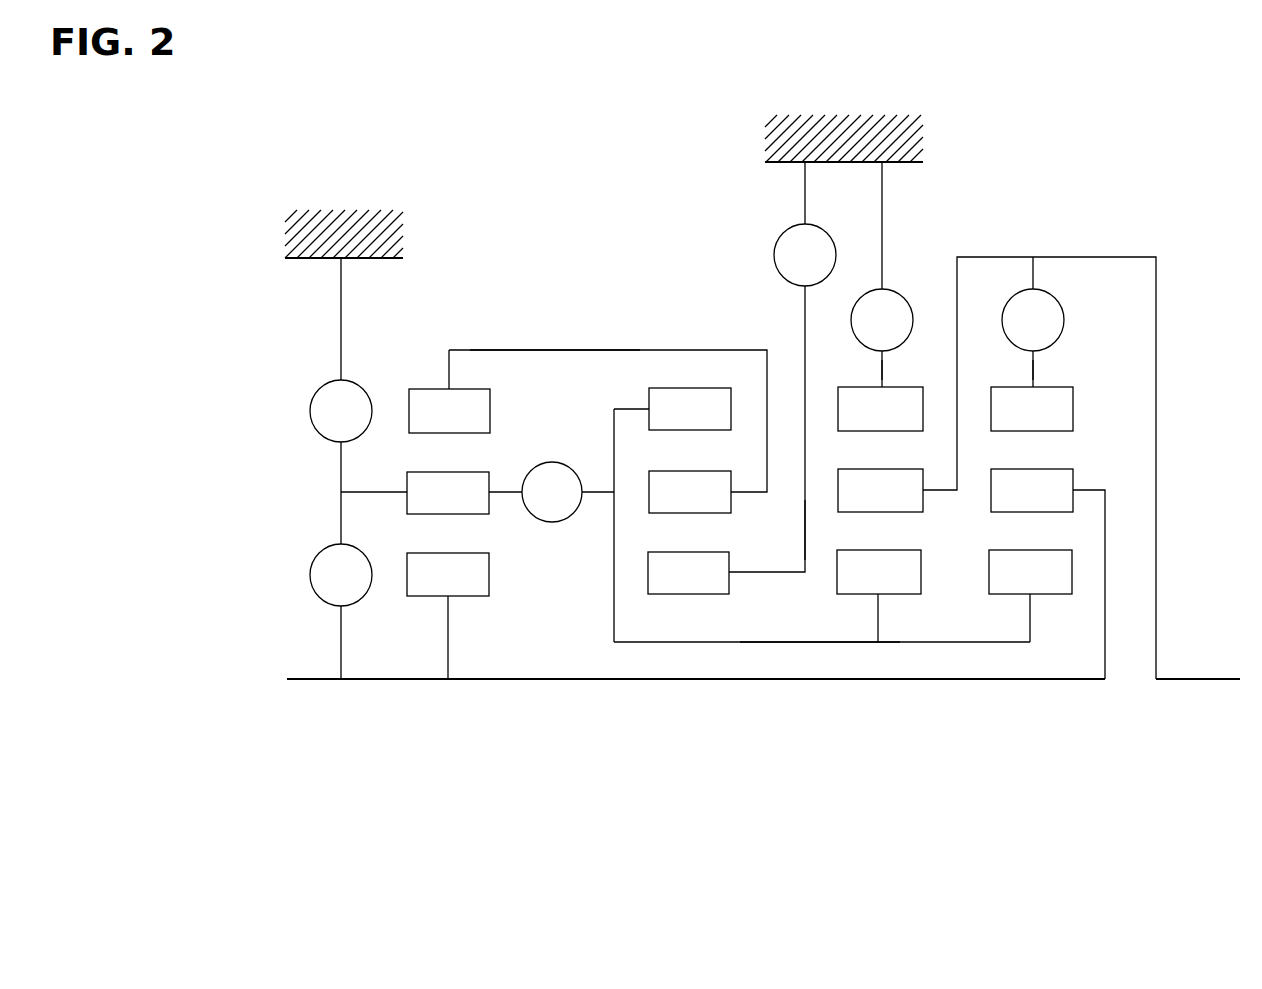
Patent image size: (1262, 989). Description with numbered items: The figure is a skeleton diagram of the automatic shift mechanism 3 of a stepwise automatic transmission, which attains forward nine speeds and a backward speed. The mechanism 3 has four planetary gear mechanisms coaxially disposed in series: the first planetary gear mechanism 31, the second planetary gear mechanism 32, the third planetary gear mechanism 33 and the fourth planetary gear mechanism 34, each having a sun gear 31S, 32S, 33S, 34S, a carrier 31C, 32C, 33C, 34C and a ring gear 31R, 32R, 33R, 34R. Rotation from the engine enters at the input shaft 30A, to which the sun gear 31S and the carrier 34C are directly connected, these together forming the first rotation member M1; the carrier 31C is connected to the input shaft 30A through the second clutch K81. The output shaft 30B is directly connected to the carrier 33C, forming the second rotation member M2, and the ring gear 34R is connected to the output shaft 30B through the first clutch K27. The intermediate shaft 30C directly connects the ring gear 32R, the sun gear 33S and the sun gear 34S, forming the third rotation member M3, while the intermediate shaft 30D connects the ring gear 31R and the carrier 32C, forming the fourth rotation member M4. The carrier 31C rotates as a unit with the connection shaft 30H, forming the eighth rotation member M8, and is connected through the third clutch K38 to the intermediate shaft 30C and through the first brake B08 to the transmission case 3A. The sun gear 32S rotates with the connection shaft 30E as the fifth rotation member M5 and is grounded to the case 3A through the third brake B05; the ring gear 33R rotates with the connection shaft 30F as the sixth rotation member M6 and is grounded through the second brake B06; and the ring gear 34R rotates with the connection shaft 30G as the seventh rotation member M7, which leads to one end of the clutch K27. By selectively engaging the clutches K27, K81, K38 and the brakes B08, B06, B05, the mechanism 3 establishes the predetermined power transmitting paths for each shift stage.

The automatic shift mechanism 3 is at (571, 181).
The transmission case 3A is at (383, 258).
The input shaft 30A is at (312, 680).
The output shaft 30B is at (1190, 680).
The intermediate shaft 30C is at (782, 641).
The intermediate shaft 30D is at (610, 348).
The connection shaft 30E is at (805, 312).
The connection shaft 30F is at (882, 367).
The connection shaft 30G is at (1033, 367).
The connection shaft 30H is at (510, 491).
The first planetary gear mechanism 31 is at (437, 563).
The second planetary gear mechanism 32 is at (656, 562).
The third planetary gear mechanism 33 is at (868, 561).
The fourth planetary gear mechanism 34 is at (1047, 561).
The ring gear 31R is at (449, 411).
The carrier 31C is at (448, 493).
The sun gear 31S is at (448, 574).
The ring gear 32R is at (690, 409).
The carrier 32C is at (690, 492).
The sun gear 32S is at (688, 573).
The ring gear 33R is at (880, 409).
The carrier 33C is at (880, 490).
The sun gear 33S is at (879, 572).
The ring gear 34R is at (1032, 409).
The carrier 34C is at (1032, 490).
The sun gear 34S is at (1030, 572).
The first rotation member M1 is at (568, 696).
The second rotation member M2 is at (1100, 233).
The third rotation member M3 is at (795, 661).
The fourth rotation member M4 is at (541, 335).
The fifth rotation member M5 is at (813, 525).
The sixth rotation member M6 is at (851, 376).
The seventh rotation member M7 is at (1003, 376).
The eighth rotation member M8 is at (428, 467).
The third brake B05 is at (805, 255).
The second brake B06 is at (882, 256).
The first brake B08 is at (341, 411).
The first clutch K27 is at (1033, 320).
The third clutch K38 is at (552, 492).
The second clutch K81 is at (341, 575).